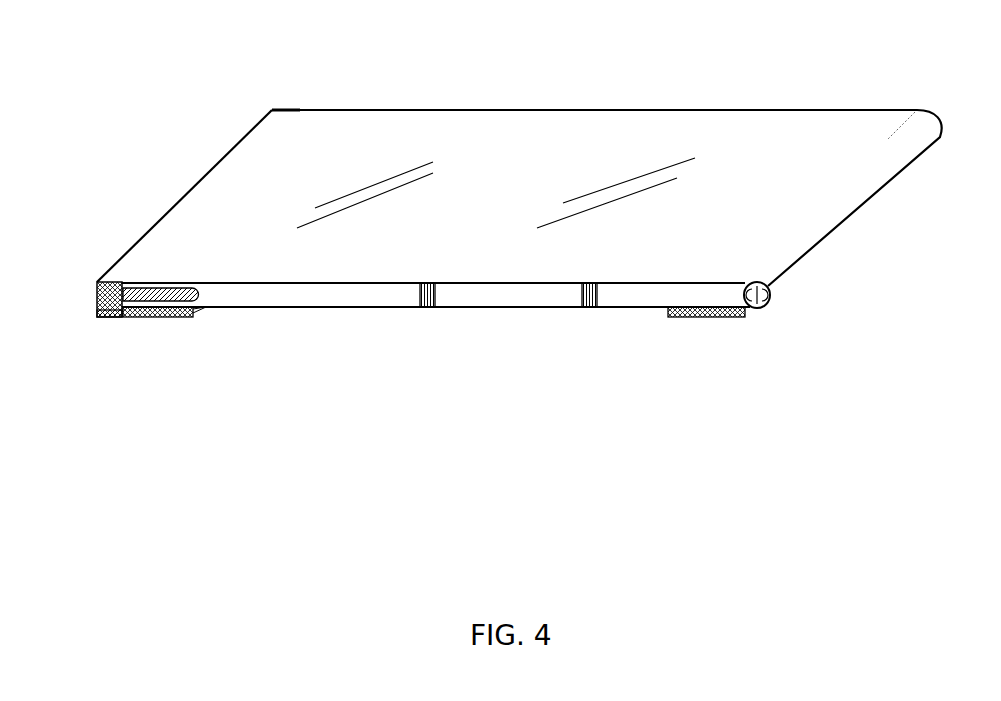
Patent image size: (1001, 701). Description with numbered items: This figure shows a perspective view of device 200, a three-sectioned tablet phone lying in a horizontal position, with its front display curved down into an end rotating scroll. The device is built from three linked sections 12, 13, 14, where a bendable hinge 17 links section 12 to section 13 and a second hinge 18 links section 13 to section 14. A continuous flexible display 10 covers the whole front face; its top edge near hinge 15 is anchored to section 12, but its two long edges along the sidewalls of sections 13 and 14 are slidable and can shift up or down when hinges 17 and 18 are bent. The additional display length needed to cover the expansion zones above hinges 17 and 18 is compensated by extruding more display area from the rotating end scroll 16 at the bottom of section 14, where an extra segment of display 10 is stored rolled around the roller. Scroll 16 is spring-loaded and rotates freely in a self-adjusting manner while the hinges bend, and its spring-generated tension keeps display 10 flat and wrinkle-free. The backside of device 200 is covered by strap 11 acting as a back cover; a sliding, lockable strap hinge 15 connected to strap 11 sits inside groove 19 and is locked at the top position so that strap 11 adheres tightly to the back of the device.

The device 200 is at (156, 60).
The flexible display 10 is at (613, 120).
The lockable strap hinge 15 is at (290, 108).
The strap 11 is at (337, 314).
The section 12 is at (282, 308).
The section 13 is at (528, 303).
The section 14 is at (645, 303).
The rotating end scroll 16 is at (755, 309).
The hinge 17 is at (425, 308).
The hinge 18 is at (587, 308).
The groove 19 is at (148, 318).